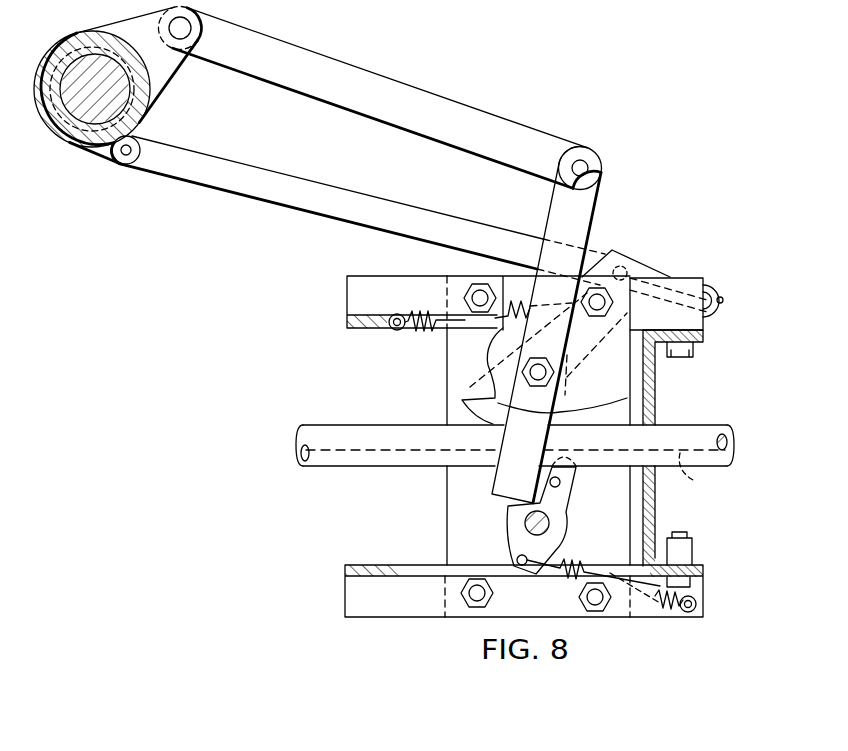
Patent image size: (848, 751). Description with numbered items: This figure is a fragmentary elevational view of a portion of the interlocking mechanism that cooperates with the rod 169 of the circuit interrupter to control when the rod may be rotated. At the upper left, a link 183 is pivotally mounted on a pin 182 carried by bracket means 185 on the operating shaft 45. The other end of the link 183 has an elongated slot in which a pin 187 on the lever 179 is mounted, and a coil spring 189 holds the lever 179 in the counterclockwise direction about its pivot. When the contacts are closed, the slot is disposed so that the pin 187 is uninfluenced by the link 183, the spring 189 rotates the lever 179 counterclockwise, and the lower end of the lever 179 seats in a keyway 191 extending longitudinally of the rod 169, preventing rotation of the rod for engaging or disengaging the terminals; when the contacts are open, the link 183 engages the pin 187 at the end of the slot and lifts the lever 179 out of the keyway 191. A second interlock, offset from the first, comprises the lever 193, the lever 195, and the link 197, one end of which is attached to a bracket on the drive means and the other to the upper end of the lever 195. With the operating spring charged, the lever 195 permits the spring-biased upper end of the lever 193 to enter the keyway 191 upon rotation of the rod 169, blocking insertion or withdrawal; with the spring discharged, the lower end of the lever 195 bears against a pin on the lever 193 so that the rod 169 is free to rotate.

The operating shaft 45 is at (125, 78).
The bracket means 185 is at (149, 116).
The pin 182 is at (138, 143).
The link 183 is at (282, 182).
The link 197 is at (412, 91).
The lever 195 is at (588, 200).
The pin 187 is at (615, 272).
The lever 179 is at (725, 293).
The coil spring 189 is at (420, 304).
The rod 169 is at (693, 434).
The keyway 191 is at (703, 474).
The lever 193 is at (518, 539).